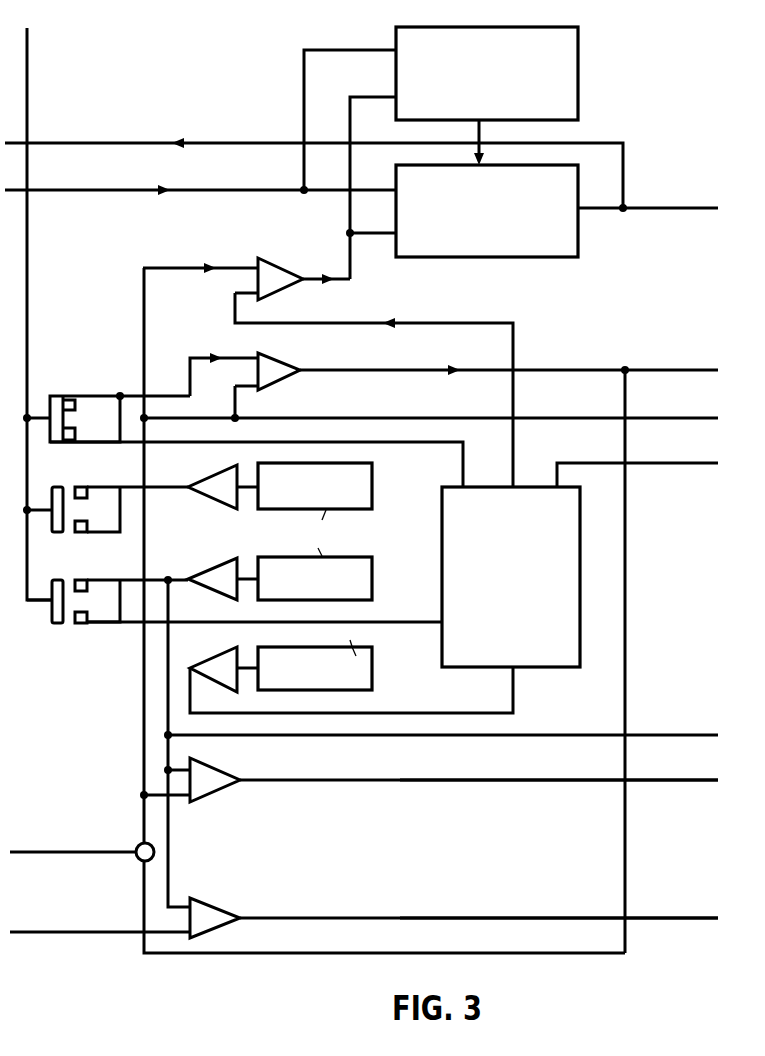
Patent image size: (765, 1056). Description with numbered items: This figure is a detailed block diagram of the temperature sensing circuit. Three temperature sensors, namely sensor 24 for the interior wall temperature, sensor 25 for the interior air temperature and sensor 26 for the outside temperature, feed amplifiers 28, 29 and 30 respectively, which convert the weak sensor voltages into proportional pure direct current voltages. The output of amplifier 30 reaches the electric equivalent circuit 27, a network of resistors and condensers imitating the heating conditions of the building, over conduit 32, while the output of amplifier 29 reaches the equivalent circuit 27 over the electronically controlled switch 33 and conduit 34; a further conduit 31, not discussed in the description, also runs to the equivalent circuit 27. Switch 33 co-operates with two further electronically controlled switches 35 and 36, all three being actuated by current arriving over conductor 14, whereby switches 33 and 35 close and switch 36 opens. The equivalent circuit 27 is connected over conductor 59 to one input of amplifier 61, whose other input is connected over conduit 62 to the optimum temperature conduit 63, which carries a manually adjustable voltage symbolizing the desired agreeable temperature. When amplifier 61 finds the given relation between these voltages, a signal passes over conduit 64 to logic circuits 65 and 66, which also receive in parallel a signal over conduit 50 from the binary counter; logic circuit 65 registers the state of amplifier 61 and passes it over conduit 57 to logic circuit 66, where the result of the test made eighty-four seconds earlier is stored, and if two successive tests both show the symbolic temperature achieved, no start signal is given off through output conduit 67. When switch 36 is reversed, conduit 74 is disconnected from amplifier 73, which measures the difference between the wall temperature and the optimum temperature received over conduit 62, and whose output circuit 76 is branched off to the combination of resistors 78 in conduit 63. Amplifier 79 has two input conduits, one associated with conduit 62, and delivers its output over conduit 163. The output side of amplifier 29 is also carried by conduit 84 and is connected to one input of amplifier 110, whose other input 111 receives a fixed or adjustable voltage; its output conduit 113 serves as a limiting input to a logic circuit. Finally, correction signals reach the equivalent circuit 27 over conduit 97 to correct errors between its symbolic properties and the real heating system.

The conductor 14 is at (29, 92).
The output conduit 67 is at (142, 143).
The conduit 50 is at (250, 190).
The conduit 64 is at (348, 212).
The amplifier 61 is at (280, 278).
The logic circuit 65 is at (487, 73).
The logic circuit 66 is at (487, 211).
The conduit 57 is at (500, 130).
The conductor 59 is at (492, 322).
The conduit 62 is at (146, 318).
The conduit 74 is at (188, 386).
The amplifier 73 is at (278, 372).
The output circuit 76 is at (590, 368).
The electronically controlled switch 36 is at (70, 418).
The line 31 is at (412, 444).
The electronically controlled switch 35 is at (78, 522).
The electronically controlled switch 33 is at (78, 612).
The amplifier 28 is at (220, 494).
The temperature sensor 24 is at (315, 503).
The amplifier 29 is at (222, 586).
The temperature sensor 25 is at (315, 574).
The amplifier 30 is at (218, 664).
The temperature sensor 26 is at (315, 660).
The conduit 32 is at (450, 712).
The electric equivalent circuit 27 is at (511, 577).
The conduit 34 is at (406, 620).
The conduit 97 is at (650, 462).
The conduit 84 is at (166, 690).
The amplifier 79 is at (212, 785).
The conduit 163 is at (452, 784).
The optimum temperature conduit 63 is at (82, 850).
The combination of resistors 78 is at (136, 862).
The amplifier 110 is at (228, 918).
The output conduit 113 is at (422, 917).
The input 111 is at (100, 935).